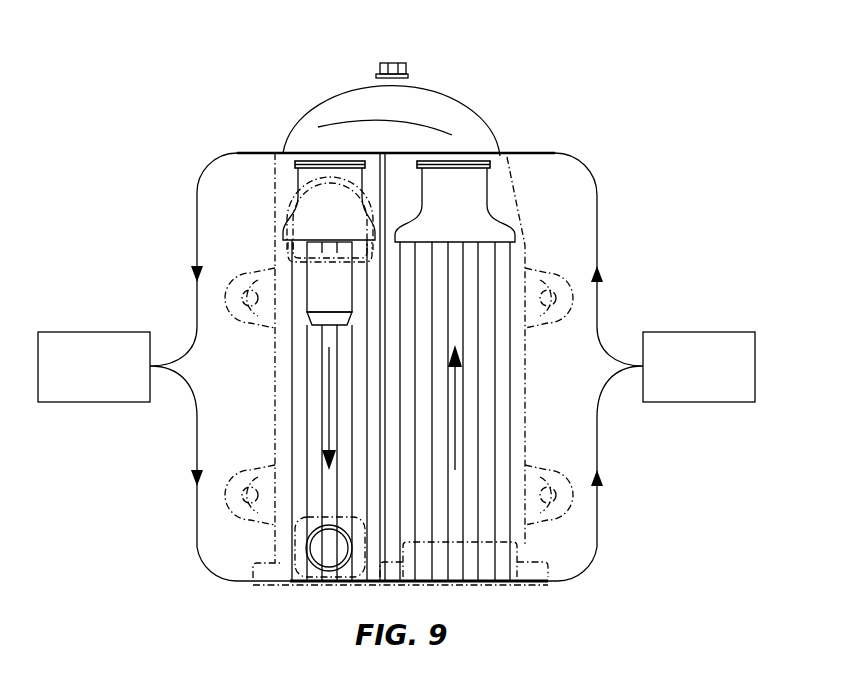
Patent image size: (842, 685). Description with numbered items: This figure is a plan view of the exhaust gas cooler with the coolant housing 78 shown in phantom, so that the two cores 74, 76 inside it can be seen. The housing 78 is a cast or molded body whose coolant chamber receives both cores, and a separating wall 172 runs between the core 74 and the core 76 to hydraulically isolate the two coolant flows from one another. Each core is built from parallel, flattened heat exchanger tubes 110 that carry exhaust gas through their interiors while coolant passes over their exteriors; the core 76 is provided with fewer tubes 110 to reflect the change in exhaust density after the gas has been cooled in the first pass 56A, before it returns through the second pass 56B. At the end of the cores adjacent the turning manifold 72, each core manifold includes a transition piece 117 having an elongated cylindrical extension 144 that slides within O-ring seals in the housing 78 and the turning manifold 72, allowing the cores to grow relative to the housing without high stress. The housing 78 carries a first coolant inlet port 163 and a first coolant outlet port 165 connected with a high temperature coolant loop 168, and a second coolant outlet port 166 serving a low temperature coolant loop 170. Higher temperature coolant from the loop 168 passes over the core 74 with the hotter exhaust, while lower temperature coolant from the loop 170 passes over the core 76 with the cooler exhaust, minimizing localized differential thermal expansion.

The turning manifold 72 is at (474, 103).
The separating wall 172 is at (373, 165).
The elongated cylindrical extension 144 is at (296, 181).
The transition piece 117 is at (283, 231).
The first coolant outlet port 165 is at (313, 273).
The heat exchanger tubes 110 is at (298, 363).
The core 76 is at (296, 400).
The core 74 is at (498, 386).
The coolant housing 78 is at (535, 430).
The second coolant loop 170 is at (115, 332).
The first coolant loop 168 is at (668, 332).
The pass 56B is at (332, 437).
The pass 56A is at (455, 440).
The first coolant inlet port 163 is at (318, 523).
The second coolant outlet port 166 is at (530, 530).